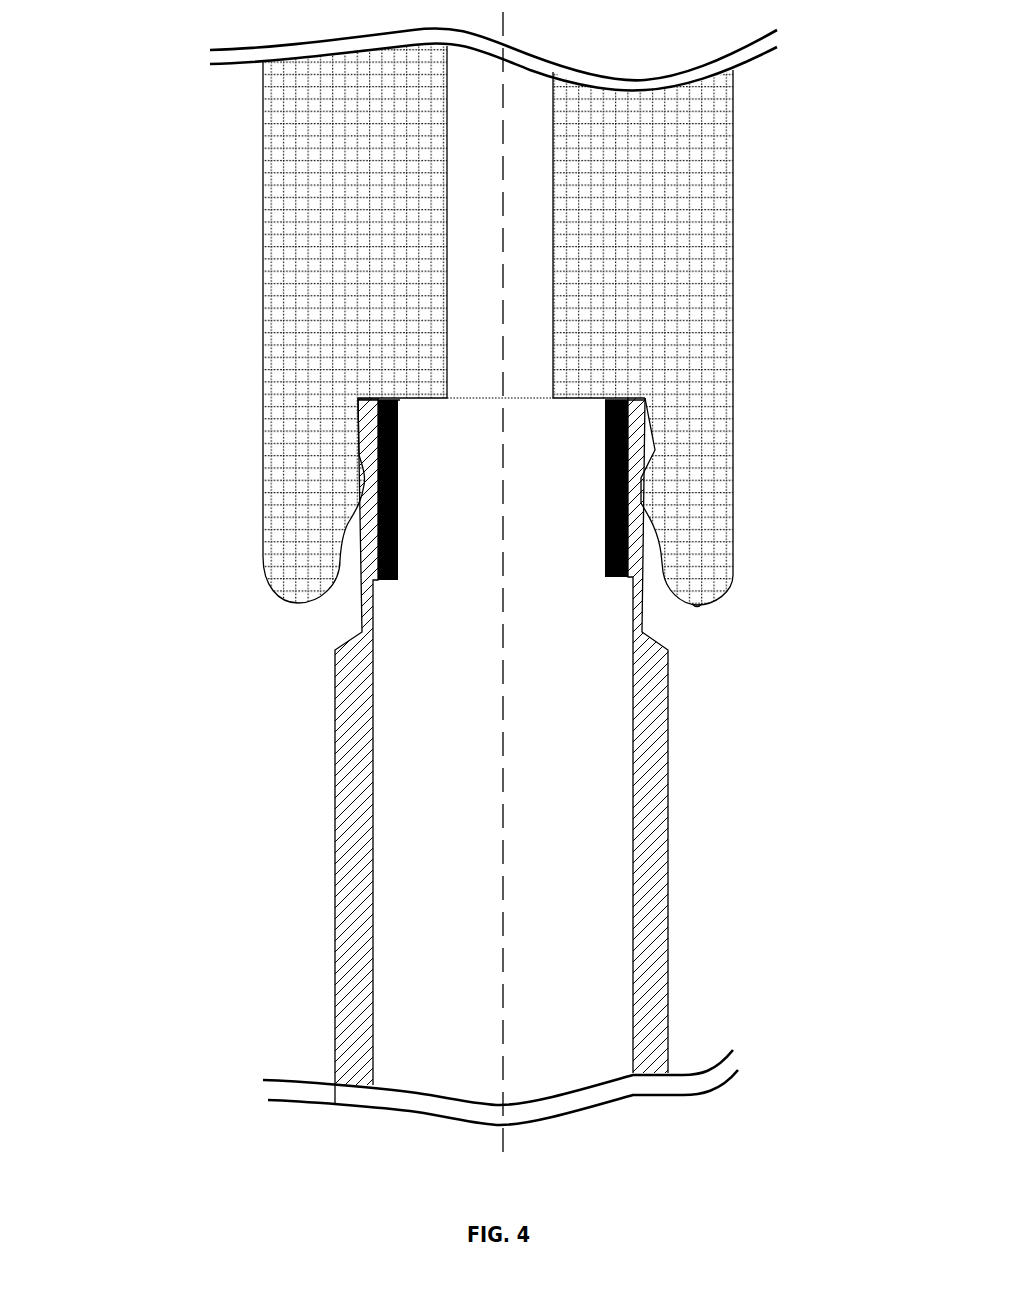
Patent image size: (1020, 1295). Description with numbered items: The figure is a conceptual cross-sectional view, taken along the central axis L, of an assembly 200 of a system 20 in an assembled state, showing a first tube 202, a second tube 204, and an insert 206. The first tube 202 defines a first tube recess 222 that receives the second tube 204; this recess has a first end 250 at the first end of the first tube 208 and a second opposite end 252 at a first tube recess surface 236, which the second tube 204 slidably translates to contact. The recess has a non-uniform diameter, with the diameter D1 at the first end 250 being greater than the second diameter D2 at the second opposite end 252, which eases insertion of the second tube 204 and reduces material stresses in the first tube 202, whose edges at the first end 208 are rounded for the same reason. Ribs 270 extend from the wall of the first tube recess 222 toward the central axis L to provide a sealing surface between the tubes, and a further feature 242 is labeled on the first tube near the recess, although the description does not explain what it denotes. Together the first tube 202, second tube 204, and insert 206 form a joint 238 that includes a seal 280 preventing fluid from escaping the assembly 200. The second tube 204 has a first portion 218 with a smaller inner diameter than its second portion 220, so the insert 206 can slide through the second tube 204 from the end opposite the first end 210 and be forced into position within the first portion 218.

The system 20 is at (107, 109).
The assembly 200 is at (164, 274).
The first tube 202 is at (710, 303).
The second tube 204 is at (643, 803).
The insert 206 is at (640, 435).
The first end of the first tube 208 is at (700, 603).
The first end 210 is at (357, 399).
The first portion of second tube 218 is at (360, 588).
The second portion of second tube 220 is at (352, 795).
The first tube recess 222 is at (343, 433).
The first tube recess surface 236 is at (648, 398).
The joint 238 is at (162, 541).
The bulge 242 is at (643, 590).
The first end of first tube recess 250 is at (700, 607).
The second opposite end of first tube recess 252 is at (355, 398).
The rib 270 is at (345, 493).
The seal 280 is at (147, 454).
The diameter at first end of recess D1 is at (697, 632).
The second diameter D2 is at (645, 398).
The central axis L is at (506, 21).